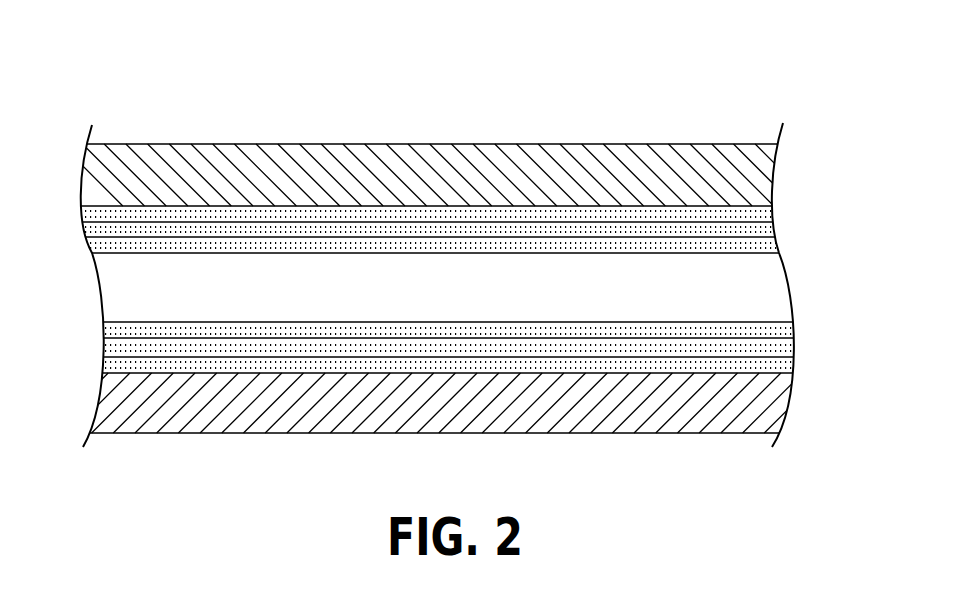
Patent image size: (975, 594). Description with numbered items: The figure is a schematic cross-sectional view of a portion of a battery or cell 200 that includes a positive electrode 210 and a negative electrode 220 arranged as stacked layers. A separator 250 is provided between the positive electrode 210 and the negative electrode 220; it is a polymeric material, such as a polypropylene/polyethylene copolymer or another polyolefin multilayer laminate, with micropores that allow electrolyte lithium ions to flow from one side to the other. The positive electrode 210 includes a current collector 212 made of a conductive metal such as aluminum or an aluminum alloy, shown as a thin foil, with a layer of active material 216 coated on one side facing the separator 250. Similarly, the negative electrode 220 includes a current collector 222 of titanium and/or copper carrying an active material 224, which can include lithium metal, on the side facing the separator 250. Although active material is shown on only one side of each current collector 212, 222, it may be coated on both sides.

The battery or cell 200 is at (579, 66).
The positive electrode 210 is at (809, 143).
The current collector 212 is at (325, 167).
The active material 216 is at (82, 210).
The separator 250 is at (108, 304).
The negative electrode 220 is at (809, 323).
The current collector 222 is at (685, 415).
The active material 224 is at (110, 363).